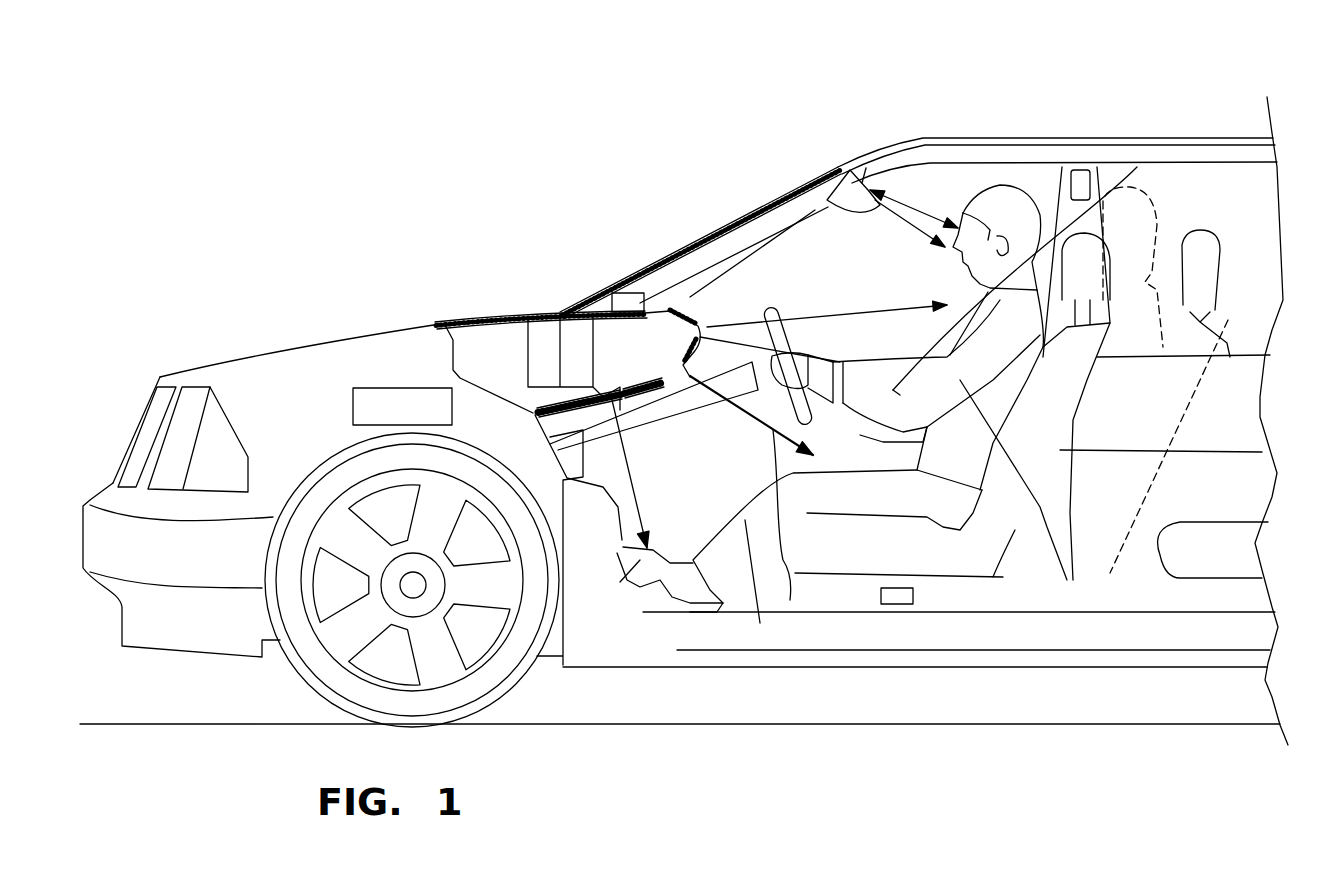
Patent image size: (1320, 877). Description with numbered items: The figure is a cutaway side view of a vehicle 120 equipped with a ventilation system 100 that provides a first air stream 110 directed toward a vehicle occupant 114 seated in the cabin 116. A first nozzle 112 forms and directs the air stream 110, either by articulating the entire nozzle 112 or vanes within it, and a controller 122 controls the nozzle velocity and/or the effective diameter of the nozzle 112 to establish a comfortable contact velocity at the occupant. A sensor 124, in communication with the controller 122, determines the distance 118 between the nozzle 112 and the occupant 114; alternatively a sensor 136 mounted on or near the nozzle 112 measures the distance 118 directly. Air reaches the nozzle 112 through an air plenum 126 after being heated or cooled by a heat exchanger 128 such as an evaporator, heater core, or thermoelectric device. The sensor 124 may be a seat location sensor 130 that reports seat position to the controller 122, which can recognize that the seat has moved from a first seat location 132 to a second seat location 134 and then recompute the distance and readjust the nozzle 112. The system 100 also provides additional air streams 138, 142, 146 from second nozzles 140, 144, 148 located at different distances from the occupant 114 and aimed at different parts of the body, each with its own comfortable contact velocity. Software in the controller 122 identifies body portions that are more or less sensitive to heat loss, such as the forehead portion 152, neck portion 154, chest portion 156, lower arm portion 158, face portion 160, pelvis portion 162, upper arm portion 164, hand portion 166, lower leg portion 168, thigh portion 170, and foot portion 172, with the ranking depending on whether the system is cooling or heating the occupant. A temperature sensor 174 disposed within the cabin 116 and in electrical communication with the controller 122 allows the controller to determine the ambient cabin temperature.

The ventilation system 100 is at (683, 233).
The air stream 110 is at (822, 260).
The nozzle 112 is at (844, 175).
The vehicle occupant 114 is at (1000, 195).
The cabin 116 is at (1213, 178).
The distance 118 is at (903, 200).
The vehicle 120 is at (1023, 137).
The controller 122 is at (375, 395).
The sensor 124 is at (633, 293).
The air plenum 126 is at (783, 213).
The heat exchanger 128 is at (575, 330).
The seat location sensor 130 is at (888, 604).
The first seat location 132 is at (1010, 577).
The second seat location 134 is at (1133, 573).
The sensor 136 is at (866, 168).
The second air stream 138 is at (824, 300).
The second nozzle 140 is at (698, 312).
The second air stream 142 is at (760, 623).
The second nozzle 144 is at (680, 382).
The second air stream 146 is at (628, 430).
The second nozzle 148 is at (610, 400).
The forehead portion 152 is at (958, 205).
The neck portion 154 is at (1137, 167).
The chest portion 156 is at (947, 340).
The lower arm portion 158 is at (883, 407).
The face portion 160 is at (935, 303).
The pelvis portion 162 is at (937, 500).
The upper arm portion 164 is at (1062, 570).
The hand portion 166 is at (803, 357).
The lower leg portion 168 is at (760, 583).
The thigh portion 170 is at (840, 493).
The foot portion 172 is at (690, 400).
The temperature sensor 174 is at (1081, 170).